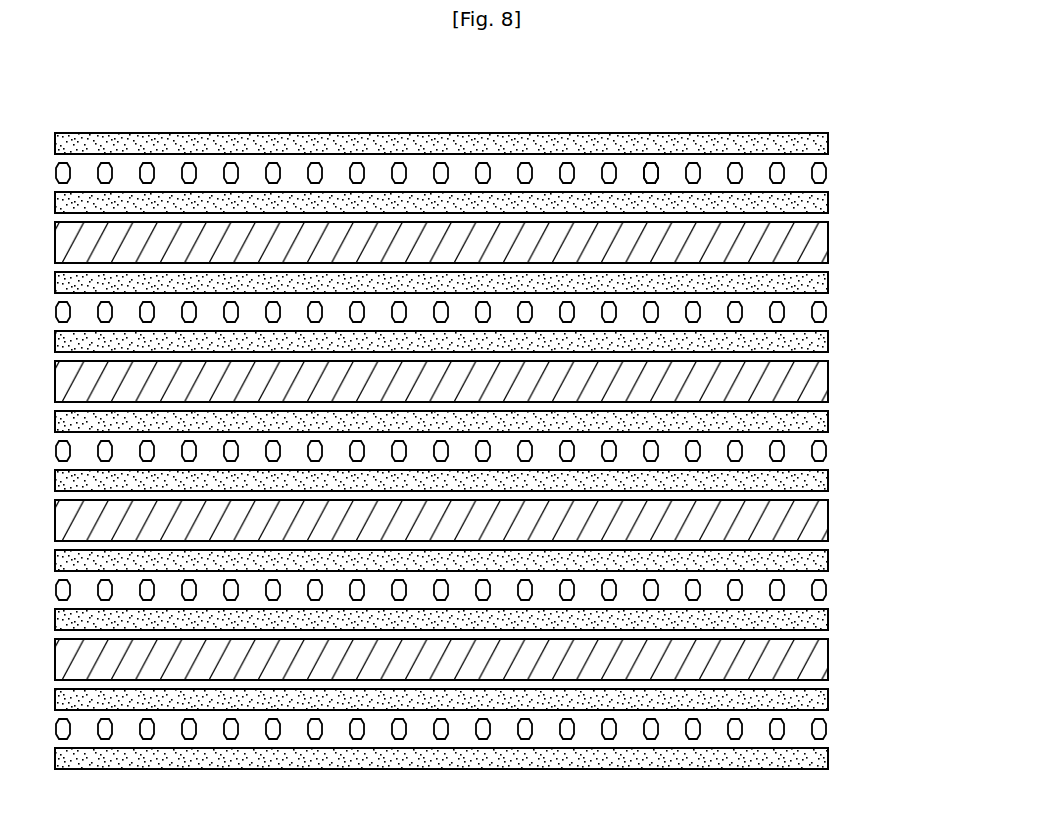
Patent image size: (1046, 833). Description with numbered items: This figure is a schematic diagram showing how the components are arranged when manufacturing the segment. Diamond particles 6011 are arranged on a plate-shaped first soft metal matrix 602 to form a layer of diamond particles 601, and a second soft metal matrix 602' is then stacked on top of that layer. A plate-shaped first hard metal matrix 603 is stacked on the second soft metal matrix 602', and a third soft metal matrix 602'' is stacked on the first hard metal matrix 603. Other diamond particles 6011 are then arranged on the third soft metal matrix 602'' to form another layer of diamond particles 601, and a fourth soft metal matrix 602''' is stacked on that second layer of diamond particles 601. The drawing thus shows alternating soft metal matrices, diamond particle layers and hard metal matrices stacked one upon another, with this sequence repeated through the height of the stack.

The layer of diamond particles 601 is at (831, 173).
The diamond particles 6011 is at (652, 163).
The first soft metal matrix 602 is at (490, 141).
The second soft metal matrix 602' is at (482, 225).
The third soft metal matrix 602'' is at (498, 326).
The fourth soft metal matrix 602''' is at (486, 393).
The first hard metal matrix 603 is at (829, 255).